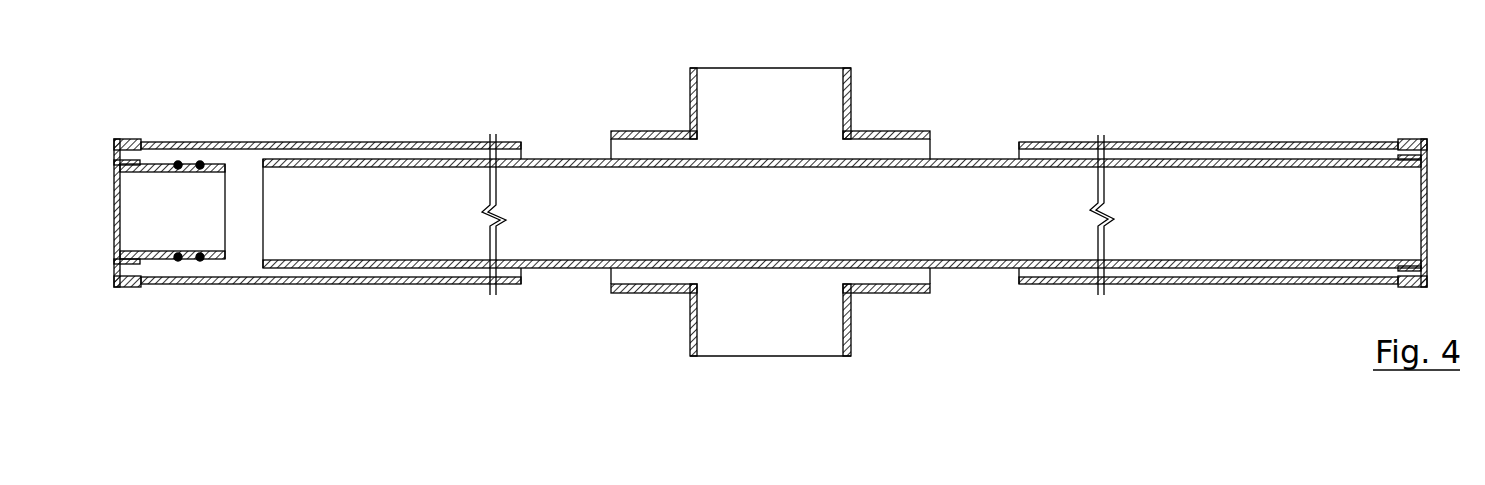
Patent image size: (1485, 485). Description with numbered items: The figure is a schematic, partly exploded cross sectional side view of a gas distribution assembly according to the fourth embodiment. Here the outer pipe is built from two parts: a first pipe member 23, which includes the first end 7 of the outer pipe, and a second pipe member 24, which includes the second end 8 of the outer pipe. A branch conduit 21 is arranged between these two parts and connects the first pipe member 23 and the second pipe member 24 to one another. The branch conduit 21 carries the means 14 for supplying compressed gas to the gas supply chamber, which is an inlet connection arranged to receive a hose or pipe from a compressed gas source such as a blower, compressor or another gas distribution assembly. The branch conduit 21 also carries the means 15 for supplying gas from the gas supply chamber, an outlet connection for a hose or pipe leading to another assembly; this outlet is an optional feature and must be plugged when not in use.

The first end 7 is at (1418, 139).
The second end 8 is at (131, 139).
The means for supplying compressed gas 14 is at (770, 68).
The means for supplying compressed gas from the gas supply chamber 15 is at (770, 356).
The branch conduit 21 is at (678, 297).
The first pipe member 23 is at (1247, 140).
The second pipe member 24 is at (363, 140).